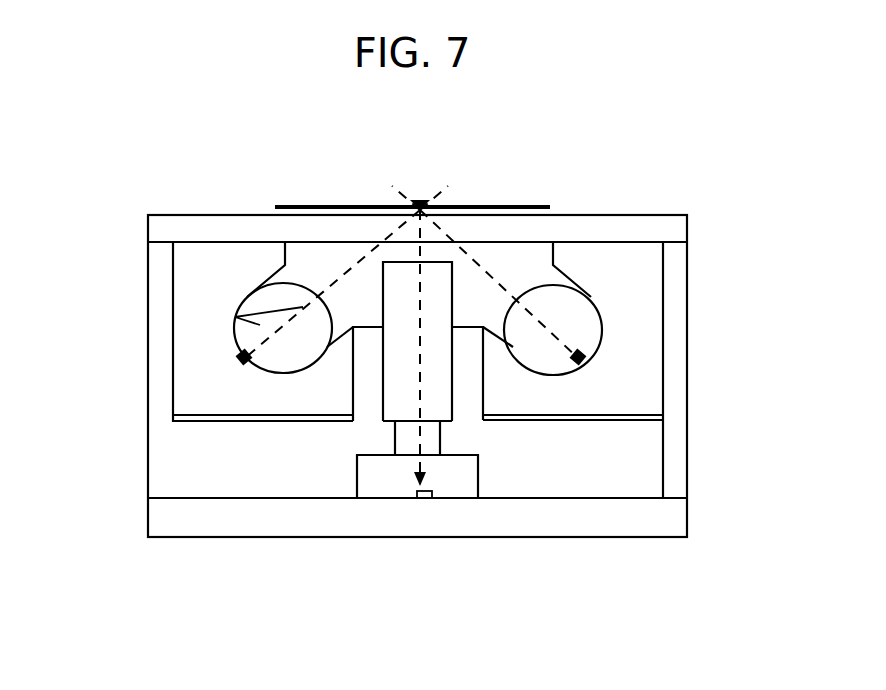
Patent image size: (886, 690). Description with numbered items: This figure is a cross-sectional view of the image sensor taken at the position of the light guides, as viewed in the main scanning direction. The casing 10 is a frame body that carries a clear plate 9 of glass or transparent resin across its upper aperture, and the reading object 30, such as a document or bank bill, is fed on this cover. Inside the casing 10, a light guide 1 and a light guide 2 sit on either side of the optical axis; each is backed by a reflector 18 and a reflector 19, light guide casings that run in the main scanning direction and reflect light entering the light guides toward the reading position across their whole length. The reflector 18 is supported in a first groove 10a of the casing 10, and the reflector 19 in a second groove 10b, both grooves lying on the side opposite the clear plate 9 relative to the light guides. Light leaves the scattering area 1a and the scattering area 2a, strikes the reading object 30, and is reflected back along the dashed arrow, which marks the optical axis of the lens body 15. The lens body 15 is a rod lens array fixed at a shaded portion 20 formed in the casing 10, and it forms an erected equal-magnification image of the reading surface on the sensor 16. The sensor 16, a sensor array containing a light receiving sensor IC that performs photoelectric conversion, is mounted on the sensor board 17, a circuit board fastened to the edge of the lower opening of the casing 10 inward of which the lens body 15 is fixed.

The light guide 1 is at (297, 308).
The scattering area 1a is at (242, 360).
The light guide 2 is at (573, 312).
The scattering area 2a is at (578, 360).
The clear plate 9 is at (240, 224).
The casing 10 is at (652, 447).
The first groove 10a is at (262, 421).
The second groove 10b is at (568, 420).
The lens body 15 is at (388, 290).
The sensor 16 is at (432, 498).
The sensor board 17 is at (643, 518).
The reflector 18 is at (202, 312).
The reflector 19 is at (587, 398).
The shaded portion 20 is at (466, 343).
The reading object 30 is at (443, 206).